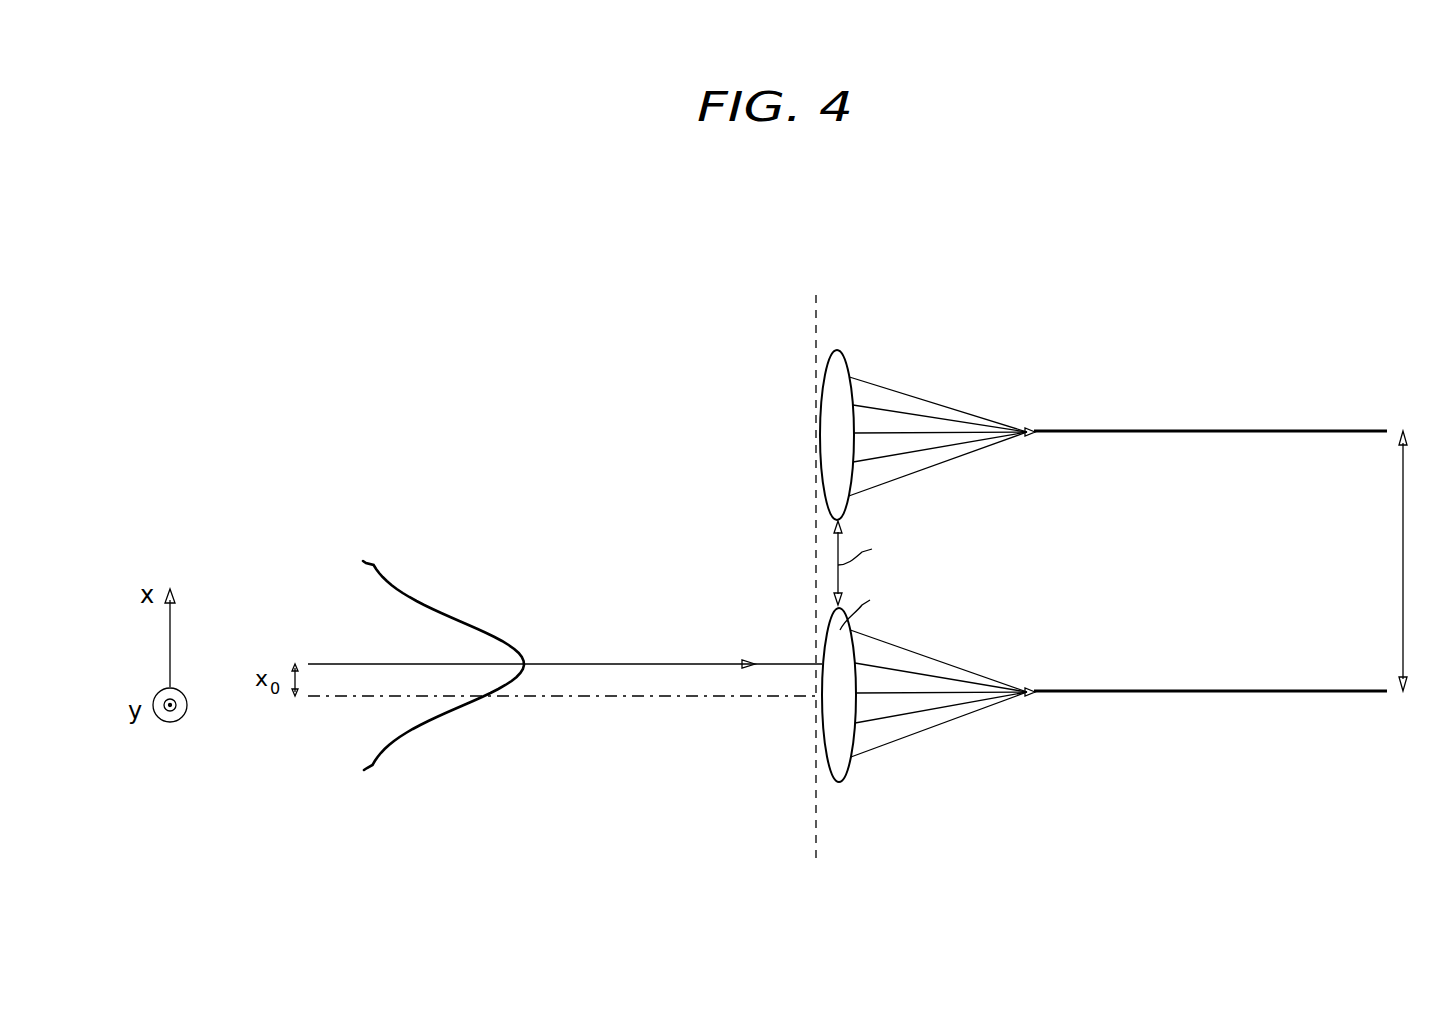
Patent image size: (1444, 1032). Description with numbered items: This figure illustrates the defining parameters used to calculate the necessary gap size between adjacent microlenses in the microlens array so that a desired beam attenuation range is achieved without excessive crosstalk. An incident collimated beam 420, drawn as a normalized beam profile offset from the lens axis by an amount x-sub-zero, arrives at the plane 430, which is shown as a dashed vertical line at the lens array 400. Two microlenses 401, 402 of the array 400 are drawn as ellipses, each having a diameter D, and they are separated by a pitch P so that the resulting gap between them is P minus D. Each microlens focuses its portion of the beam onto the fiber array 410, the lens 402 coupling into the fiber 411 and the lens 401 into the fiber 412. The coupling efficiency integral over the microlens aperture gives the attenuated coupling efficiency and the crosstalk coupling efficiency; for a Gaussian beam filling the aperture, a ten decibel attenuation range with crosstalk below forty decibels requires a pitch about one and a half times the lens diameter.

The lens array 400 is at (926, 511).
The first lens 401 is at (850, 772).
The second lens 402 is at (848, 360).
The waveguide array 410 is at (1231, 447).
The first waveguide 411 is at (1210, 430).
The second waveguide 412 is at (1210, 690).
The input light beam 420 is at (527, 665).
The lens array plane 430 is at (820, 597).